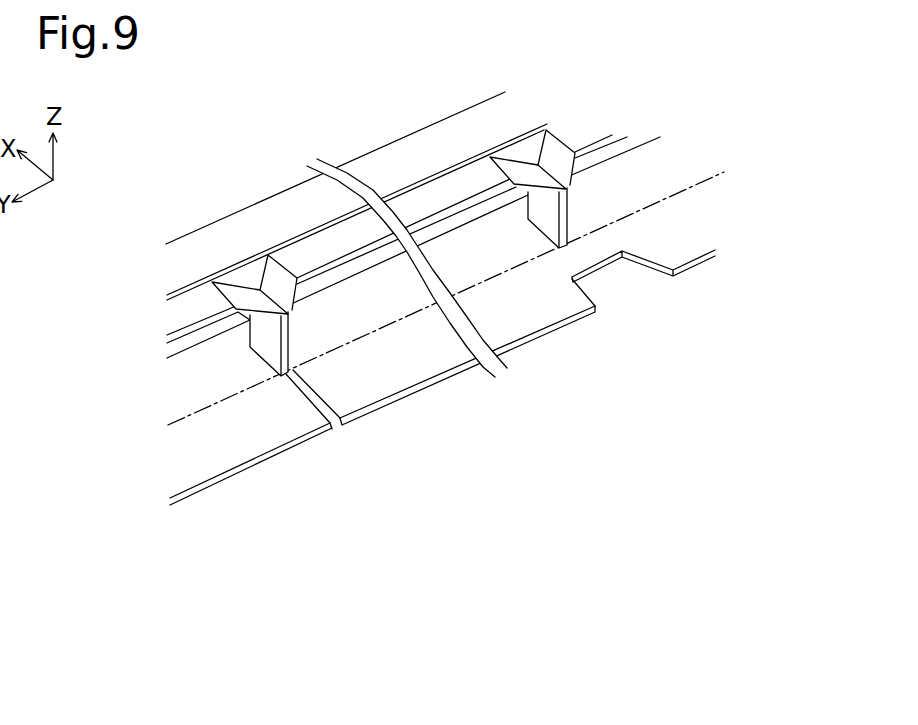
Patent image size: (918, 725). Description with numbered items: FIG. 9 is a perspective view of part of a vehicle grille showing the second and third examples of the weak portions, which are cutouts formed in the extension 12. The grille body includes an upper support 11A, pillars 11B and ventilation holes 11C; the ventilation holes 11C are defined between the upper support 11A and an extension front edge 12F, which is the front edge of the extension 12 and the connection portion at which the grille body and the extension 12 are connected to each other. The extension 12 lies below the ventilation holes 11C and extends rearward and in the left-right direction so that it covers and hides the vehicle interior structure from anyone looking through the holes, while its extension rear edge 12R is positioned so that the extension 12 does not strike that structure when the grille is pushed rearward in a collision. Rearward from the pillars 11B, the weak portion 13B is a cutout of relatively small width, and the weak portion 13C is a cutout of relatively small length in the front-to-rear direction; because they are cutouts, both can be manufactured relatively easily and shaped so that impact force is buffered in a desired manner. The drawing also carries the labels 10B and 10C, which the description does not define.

The bus bar 10B is at (204, 177).
The wire 10C is at (344, 120).
The upper support 11A is at (197, 257).
The pillars 11B is at (267, 342).
The ventilation holes 11C is at (194, 341).
The extension 12 is at (678, 248).
The extension front edge 12F is at (718, 176).
The extension rear edge 12R is at (715, 274).
The weak portion 13B is at (341, 438).
The weak portion 13C is at (619, 291).